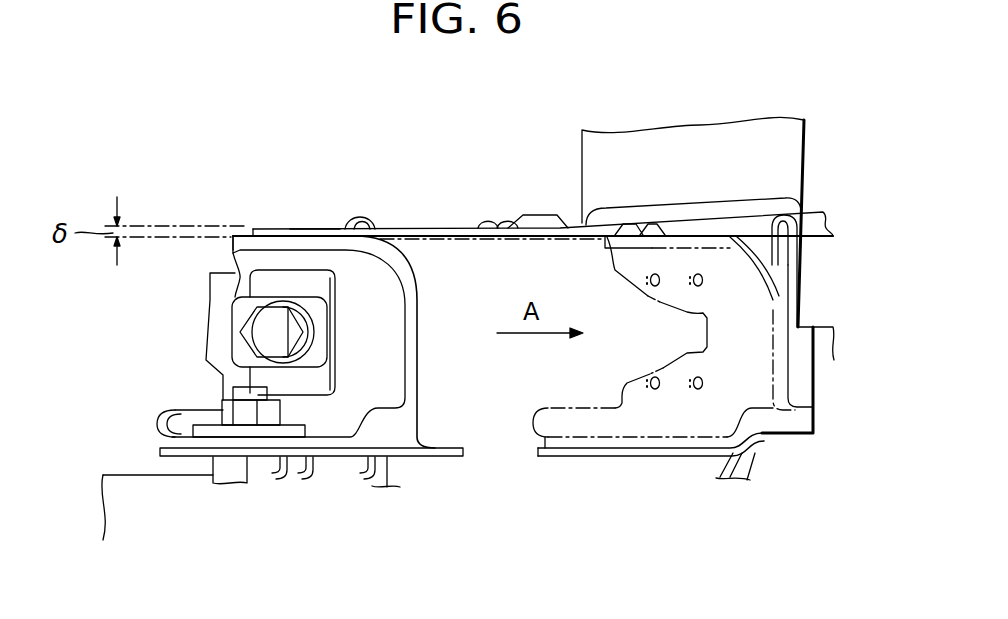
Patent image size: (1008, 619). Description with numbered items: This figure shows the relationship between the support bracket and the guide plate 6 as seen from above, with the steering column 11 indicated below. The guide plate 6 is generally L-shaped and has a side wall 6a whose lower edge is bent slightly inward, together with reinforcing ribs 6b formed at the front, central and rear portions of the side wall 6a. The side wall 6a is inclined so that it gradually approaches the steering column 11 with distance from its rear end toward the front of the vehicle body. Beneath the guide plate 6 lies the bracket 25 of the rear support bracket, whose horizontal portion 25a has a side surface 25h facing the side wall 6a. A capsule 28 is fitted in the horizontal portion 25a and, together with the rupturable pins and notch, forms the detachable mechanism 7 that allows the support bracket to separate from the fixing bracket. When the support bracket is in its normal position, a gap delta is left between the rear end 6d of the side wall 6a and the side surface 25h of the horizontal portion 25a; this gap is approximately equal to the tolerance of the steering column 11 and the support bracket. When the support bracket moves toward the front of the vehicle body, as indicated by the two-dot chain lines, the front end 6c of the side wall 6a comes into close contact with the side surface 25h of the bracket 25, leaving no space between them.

The guide plate 6 is at (432, 228).
The side wall 6a is at (314, 228).
The reinforcing ribs 6b is at (358, 218).
The front end 6c is at (712, 217).
The rear end 6d is at (257, 231).
The detachable mechanism 7 is at (231, 323).
The steering column 11 is at (117, 474).
The bracket 25 is at (421, 377).
The horizontal portion 25a is at (378, 383).
The side surface 25h is at (289, 234).
The capsule 28 is at (308, 378).